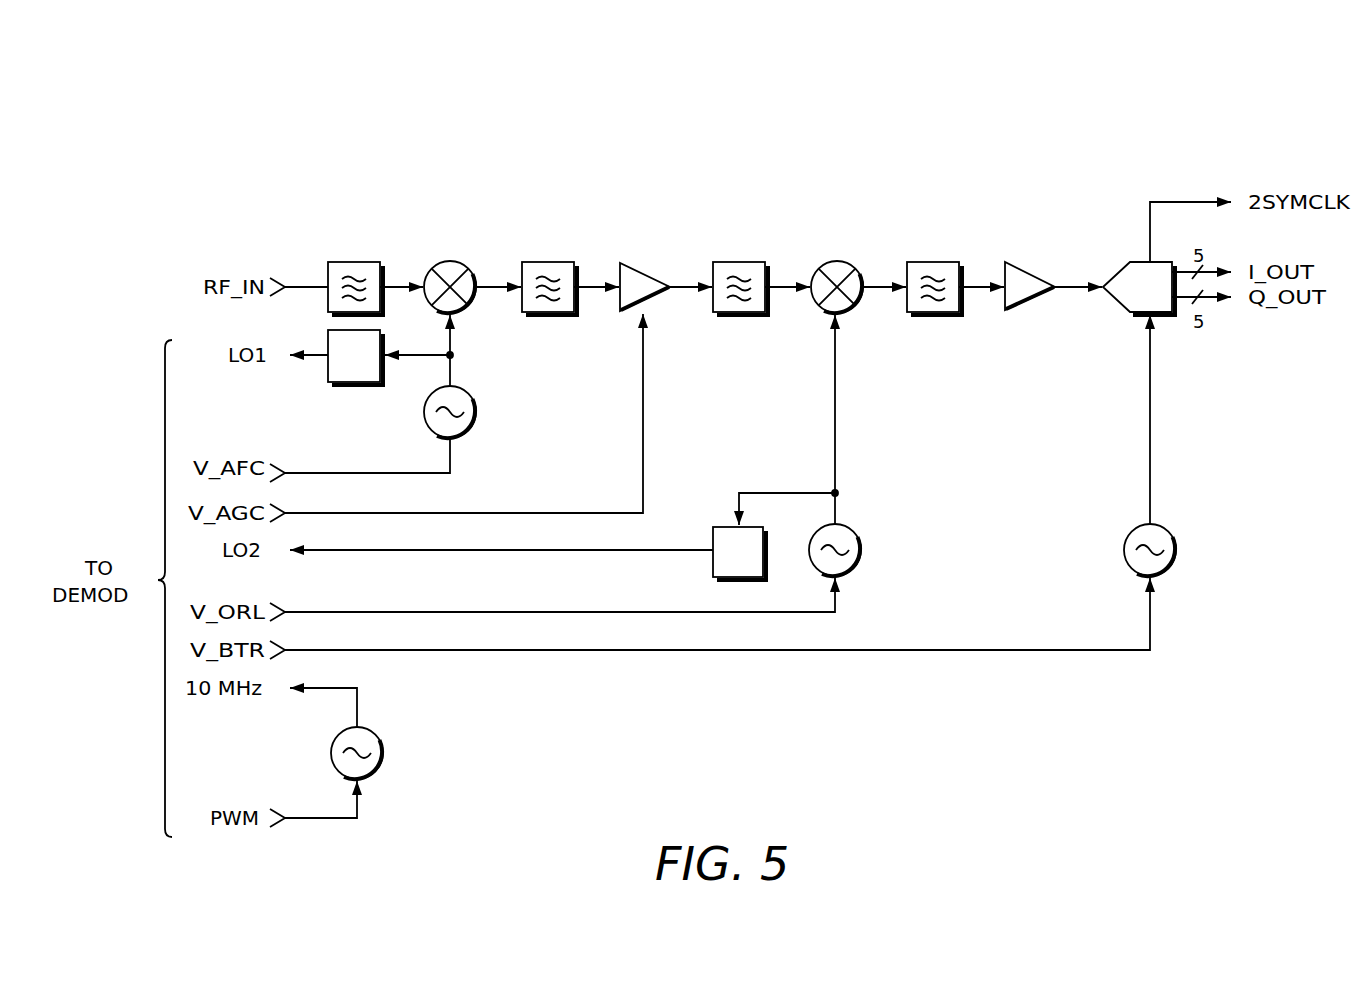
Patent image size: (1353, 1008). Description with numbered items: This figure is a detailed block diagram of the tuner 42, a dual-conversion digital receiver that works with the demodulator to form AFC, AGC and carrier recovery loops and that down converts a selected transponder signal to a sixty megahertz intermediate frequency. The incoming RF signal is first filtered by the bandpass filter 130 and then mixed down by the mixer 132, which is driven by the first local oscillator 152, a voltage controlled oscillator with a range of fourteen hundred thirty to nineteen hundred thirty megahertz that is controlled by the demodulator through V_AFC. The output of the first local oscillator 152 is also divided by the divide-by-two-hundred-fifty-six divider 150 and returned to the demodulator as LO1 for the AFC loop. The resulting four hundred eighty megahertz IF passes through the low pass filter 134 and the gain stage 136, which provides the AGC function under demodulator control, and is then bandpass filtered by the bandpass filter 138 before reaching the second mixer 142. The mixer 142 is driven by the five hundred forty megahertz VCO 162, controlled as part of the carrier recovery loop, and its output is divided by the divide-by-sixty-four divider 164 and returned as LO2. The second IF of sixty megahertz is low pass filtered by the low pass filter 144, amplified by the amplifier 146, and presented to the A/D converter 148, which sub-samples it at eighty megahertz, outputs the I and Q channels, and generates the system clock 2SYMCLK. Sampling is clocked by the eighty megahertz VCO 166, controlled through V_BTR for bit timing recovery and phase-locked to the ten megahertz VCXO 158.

The tuner 42 is at (248, 136).
The bandpass filter 130 is at (357, 262).
The mixer 132 is at (450, 262).
The low pass filter 134 is at (550, 262).
The gain stage 136 is at (645, 265).
The bandpass filter 138 is at (742, 262).
The mixer 142 is at (838, 262).
The low pass filter 144 is at (937, 262).
The amplifier 146 is at (1030, 268).
The A/D converter 148 is at (1118, 301).
The divide-by-256 divider 150 is at (353, 383).
The first local oscillator 152 is at (426, 421).
The 10 MHz VCO 158 is at (378, 777).
The 540 MHz VCO 162 is at (855, 571).
The divide-by-64 divider 164 is at (712, 534).
The 80 MHz VCO 166 is at (1173, 572).